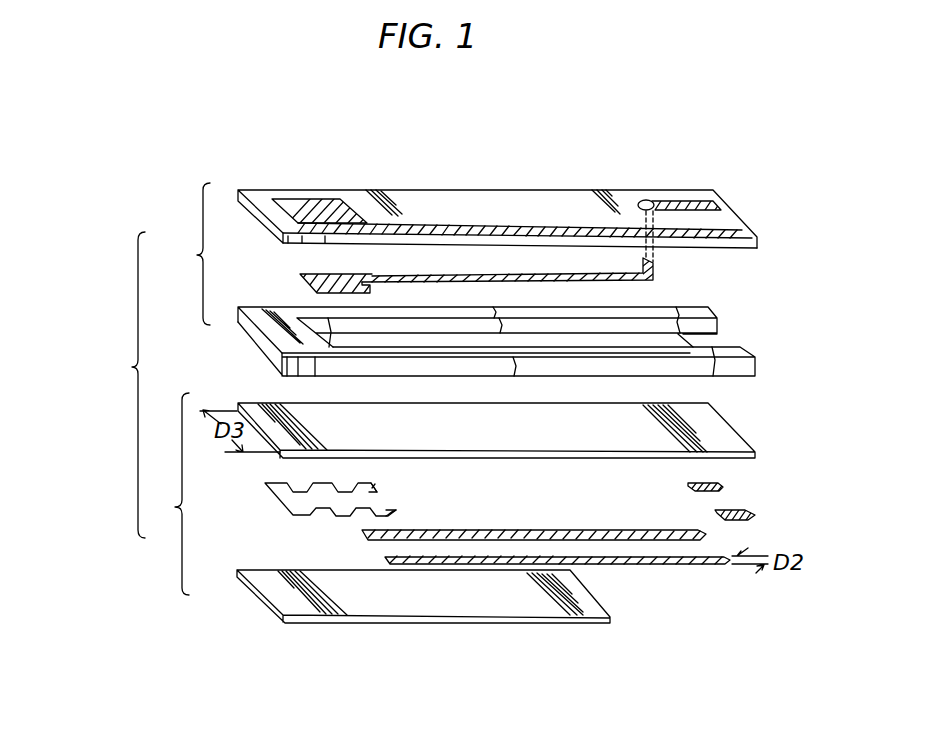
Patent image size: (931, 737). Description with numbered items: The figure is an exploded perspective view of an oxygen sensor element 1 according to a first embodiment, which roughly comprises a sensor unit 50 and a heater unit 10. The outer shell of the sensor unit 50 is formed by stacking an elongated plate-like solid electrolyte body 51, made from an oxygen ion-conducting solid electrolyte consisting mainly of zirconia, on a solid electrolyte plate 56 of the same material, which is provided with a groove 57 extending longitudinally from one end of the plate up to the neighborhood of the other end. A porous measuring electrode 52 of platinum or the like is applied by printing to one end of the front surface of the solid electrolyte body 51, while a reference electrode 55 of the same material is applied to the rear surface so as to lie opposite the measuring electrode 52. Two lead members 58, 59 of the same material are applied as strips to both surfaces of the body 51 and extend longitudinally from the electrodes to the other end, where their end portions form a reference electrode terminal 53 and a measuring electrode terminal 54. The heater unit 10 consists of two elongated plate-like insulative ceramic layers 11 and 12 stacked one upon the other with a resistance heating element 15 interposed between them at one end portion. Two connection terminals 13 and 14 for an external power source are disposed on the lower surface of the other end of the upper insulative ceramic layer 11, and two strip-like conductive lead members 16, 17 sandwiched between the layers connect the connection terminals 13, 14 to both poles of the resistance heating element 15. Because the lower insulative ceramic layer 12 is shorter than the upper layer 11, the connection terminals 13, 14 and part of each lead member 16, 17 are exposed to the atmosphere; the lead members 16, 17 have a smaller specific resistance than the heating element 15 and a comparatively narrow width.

The oxygen sensor element 1 is at (128, 378).
The heater unit 10 is at (166, 494).
The upper insulative ceramic layer 11 is at (738, 430).
The lower insulative ceramic layer 12 is at (527, 605).
The connection terminal 13 is at (723, 484).
The connection terminal 14 is at (737, 516).
The resistance heating element 15 is at (282, 507).
The conductive lead member 16 is at (533, 530).
The conductive lead member 17 is at (670, 563).
The sensor unit 50 is at (185, 254).
The solid electrolyte body 51 is at (537, 190).
The measuring electrode 52 is at (313, 200).
The reference electrode terminal 53 is at (690, 201).
The measuring electrode terminal 54 is at (733, 228).
The reference electrode 55 is at (298, 280).
The solid electrolyte plate 56 is at (698, 310).
The groove 57 is at (713, 343).
The lead member 58 is at (438, 228).
The lead member 59 is at (515, 276).